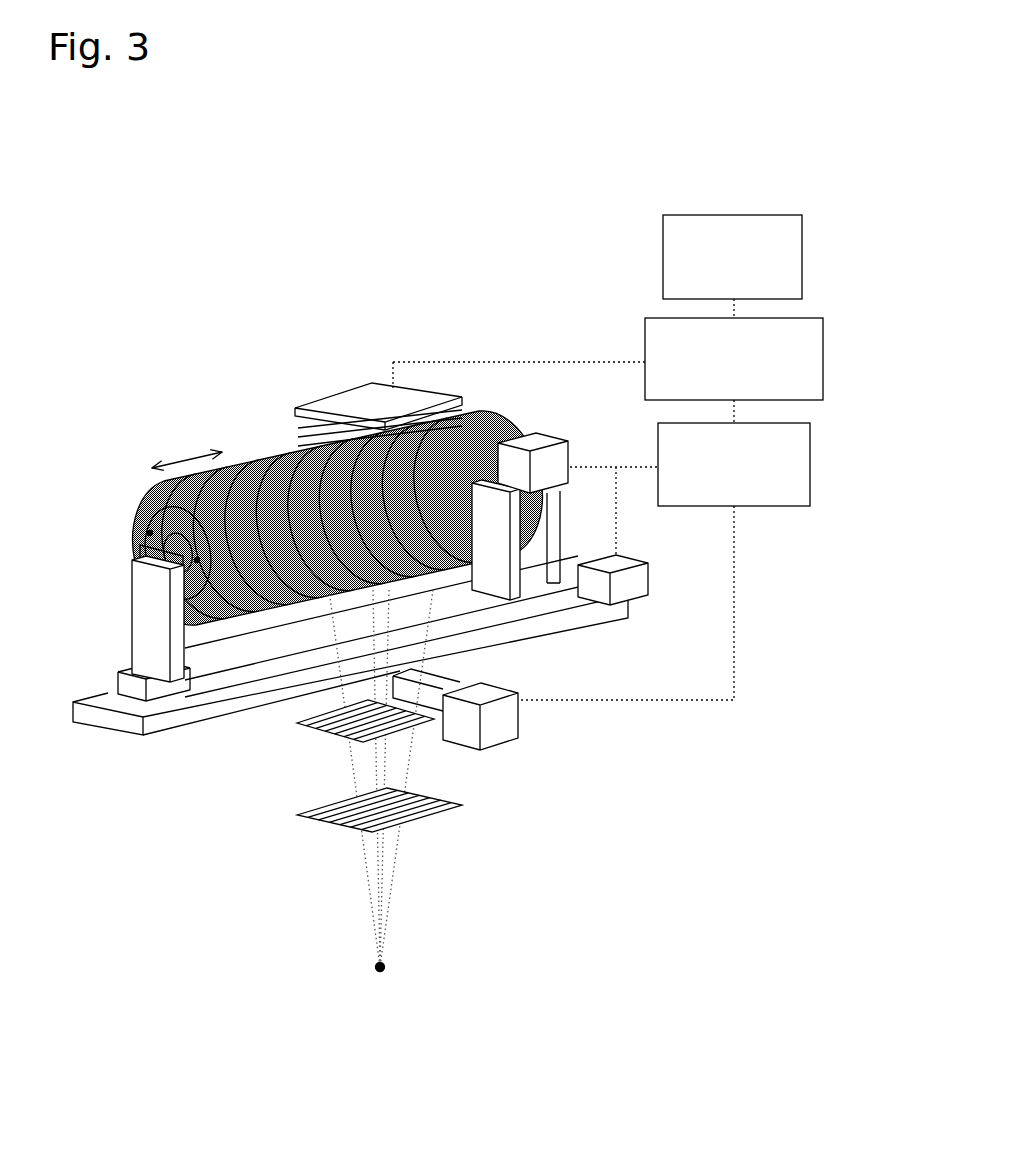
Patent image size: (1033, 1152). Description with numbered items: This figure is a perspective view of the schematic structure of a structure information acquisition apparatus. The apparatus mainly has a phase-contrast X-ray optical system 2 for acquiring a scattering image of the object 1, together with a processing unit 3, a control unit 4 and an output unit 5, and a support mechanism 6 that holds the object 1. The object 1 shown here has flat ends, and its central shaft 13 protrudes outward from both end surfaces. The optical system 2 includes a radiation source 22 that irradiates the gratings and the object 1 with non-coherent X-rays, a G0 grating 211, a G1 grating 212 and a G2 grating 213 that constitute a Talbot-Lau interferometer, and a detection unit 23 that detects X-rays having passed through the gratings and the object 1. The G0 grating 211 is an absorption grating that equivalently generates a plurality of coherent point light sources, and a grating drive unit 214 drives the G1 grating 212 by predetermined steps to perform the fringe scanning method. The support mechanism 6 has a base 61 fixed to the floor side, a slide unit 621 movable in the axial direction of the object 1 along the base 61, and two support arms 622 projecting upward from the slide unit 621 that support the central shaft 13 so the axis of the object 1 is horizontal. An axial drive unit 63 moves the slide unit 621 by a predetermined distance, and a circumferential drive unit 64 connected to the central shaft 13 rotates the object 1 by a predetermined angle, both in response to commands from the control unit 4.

The object 1 is at (195, 425).
The central shaft 13 is at (508, 462).
The phase-contrast X-ray optical system 2 is at (482, 843).
The G0 grating 211 is at (337, 823).
The G1 grating 212 is at (317, 727).
The G2 grating 213 is at (300, 430).
The grating drive unit 214 is at (510, 737).
The radiation source 22 is at (390, 960).
The detection unit 23 is at (355, 393).
The processing unit 3 is at (823, 357).
The control unit 4 is at (810, 467).
The output unit 5 is at (803, 253).
The support mechanism 6 is at (578, 625).
The base 61 is at (100, 725).
The slide unit 621 is at (118, 675).
The support arm 622 is at (523, 560).
The axial drive unit 63 is at (652, 575).
The circumferential drive unit 64 is at (568, 448).